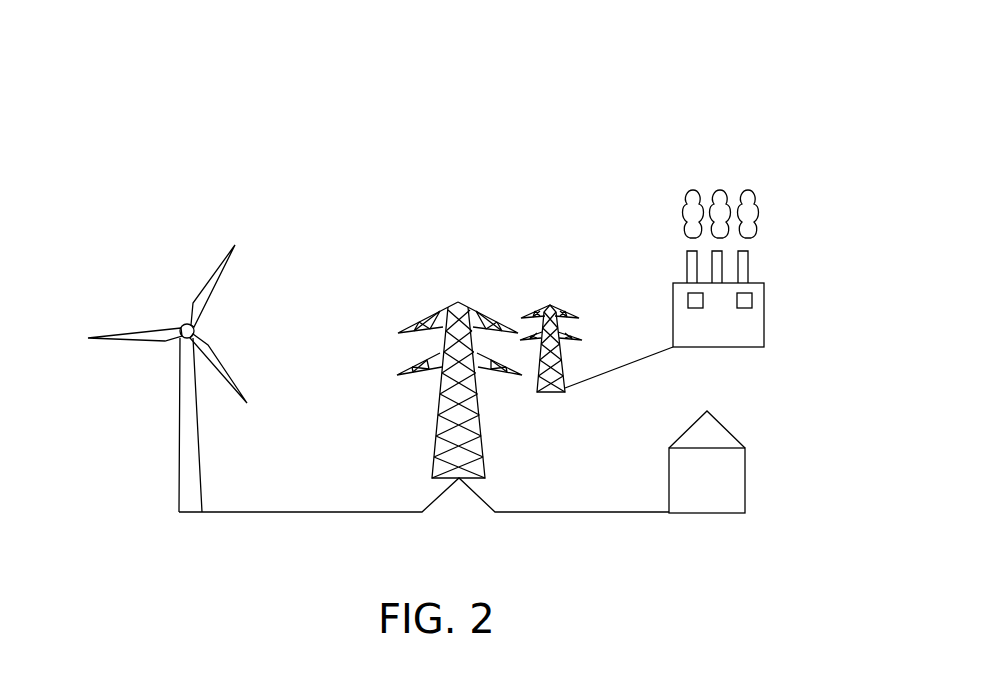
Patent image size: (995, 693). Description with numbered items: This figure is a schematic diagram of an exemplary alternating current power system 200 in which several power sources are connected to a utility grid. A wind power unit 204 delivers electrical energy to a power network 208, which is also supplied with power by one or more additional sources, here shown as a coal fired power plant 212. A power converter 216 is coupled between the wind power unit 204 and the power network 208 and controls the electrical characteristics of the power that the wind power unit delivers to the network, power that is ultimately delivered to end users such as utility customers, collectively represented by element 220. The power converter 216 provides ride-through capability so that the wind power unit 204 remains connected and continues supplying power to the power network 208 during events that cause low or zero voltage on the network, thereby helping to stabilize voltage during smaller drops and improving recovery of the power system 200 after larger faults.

The alternating current (AC) power system 200 is at (580, 117).
The wind power unit (WPU) 204 is at (148, 273).
The power converter 216 is at (210, 323).
The power network 208 is at (477, 265).
The coal fired power plant 212 is at (770, 193).
The end users 220 is at (750, 458).